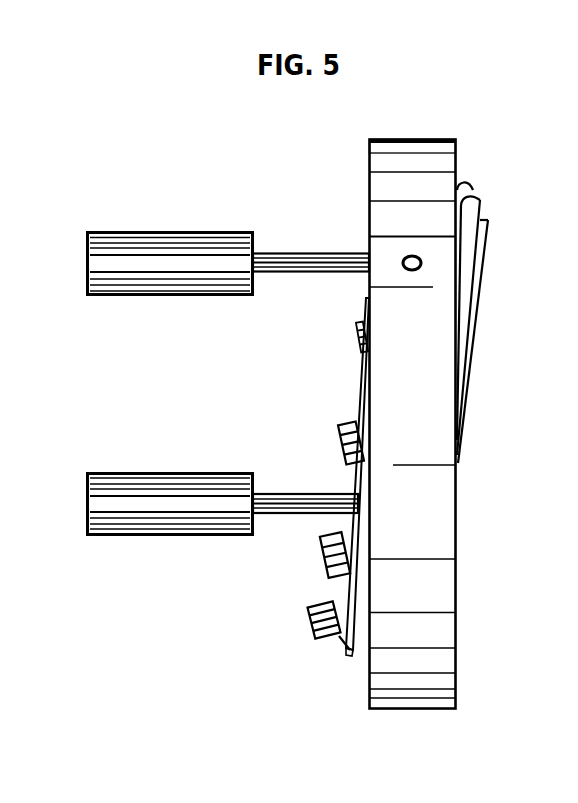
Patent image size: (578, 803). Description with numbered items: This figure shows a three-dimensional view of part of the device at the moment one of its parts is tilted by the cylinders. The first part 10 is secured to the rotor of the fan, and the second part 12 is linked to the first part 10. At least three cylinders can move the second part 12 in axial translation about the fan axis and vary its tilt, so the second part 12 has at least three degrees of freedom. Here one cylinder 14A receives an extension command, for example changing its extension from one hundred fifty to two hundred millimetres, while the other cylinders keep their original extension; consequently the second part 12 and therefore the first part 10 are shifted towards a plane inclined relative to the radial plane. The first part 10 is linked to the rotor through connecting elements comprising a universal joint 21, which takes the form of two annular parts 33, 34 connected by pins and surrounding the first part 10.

The first part 10 is at (334, 593).
The second part 12 is at (488, 281).
The cylinder 14A is at (182, 247).
The universal joint 21 is at (422, 181).
The annular part 33 is at (361, 152).
The annular part 34 is at (368, 668).